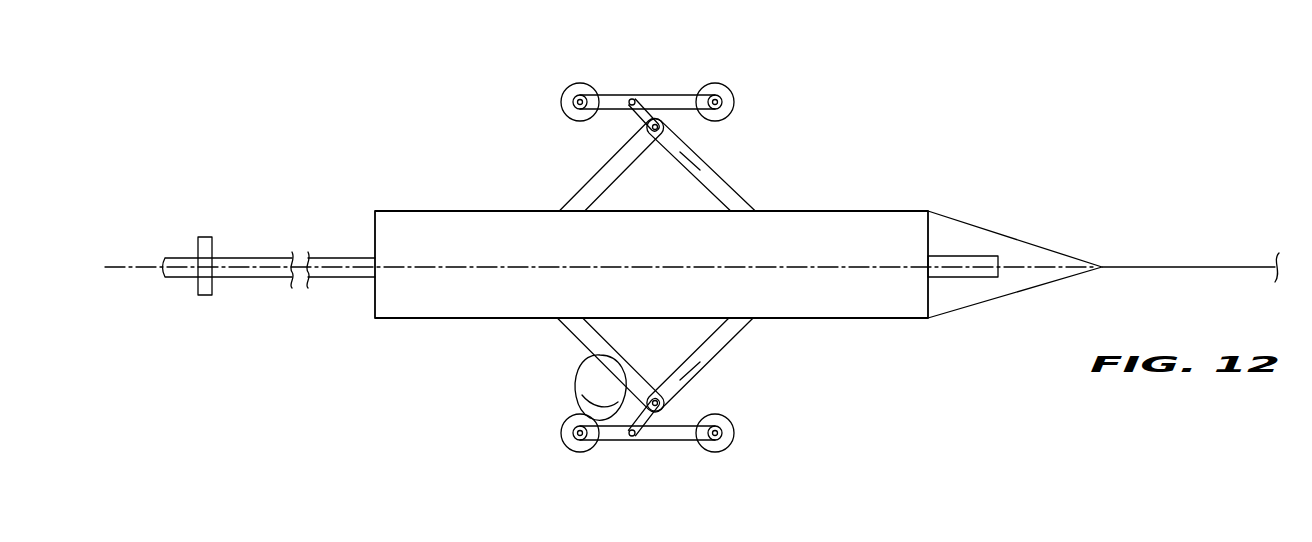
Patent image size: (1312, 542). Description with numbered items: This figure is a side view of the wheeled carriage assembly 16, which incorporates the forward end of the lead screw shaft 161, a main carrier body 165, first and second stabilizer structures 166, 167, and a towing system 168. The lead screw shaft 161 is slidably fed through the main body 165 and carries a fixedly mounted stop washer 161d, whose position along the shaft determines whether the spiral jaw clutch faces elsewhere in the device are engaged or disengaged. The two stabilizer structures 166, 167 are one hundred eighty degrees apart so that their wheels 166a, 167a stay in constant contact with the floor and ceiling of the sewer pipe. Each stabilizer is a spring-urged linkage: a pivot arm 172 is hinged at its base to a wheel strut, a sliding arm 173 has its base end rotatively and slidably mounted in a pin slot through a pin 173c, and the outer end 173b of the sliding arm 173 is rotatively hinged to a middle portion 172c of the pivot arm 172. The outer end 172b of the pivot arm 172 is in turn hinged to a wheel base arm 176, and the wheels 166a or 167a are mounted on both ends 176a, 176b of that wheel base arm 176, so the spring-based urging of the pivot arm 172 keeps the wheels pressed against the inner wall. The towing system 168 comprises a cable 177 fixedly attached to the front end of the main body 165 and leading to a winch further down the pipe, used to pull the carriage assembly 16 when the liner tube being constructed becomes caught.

The wheeled carriage assembly 16 is at (938, 151).
The lead screw shaft 161 is at (958, 255).
The stop washer 161d is at (196, 256).
The main carrier body 165 is at (878, 210).
The first stabilizer structure 166 is at (788, 117).
The wheels 166a is at (590, 84).
The second stabilizer structure 167 is at (770, 362).
The wheels 167a is at (717, 452).
The towing system 168 is at (1168, 227).
The pivot arm 172 is at (722, 182).
The outer end of pivot arm 172b is at (628, 110).
The middle portion of pivot arm 172c is at (693, 153).
The sliding arm 173 is at (577, 198).
The outer end of sliding arm 173b is at (645, 131).
The pin 173c is at (650, 136).
The wheel base arm 176 is at (688, 93).
The end of wheel base arm 176a is at (585, 86).
The end of wheel base arm 176b is at (718, 84).
The cable 177 is at (1243, 266).